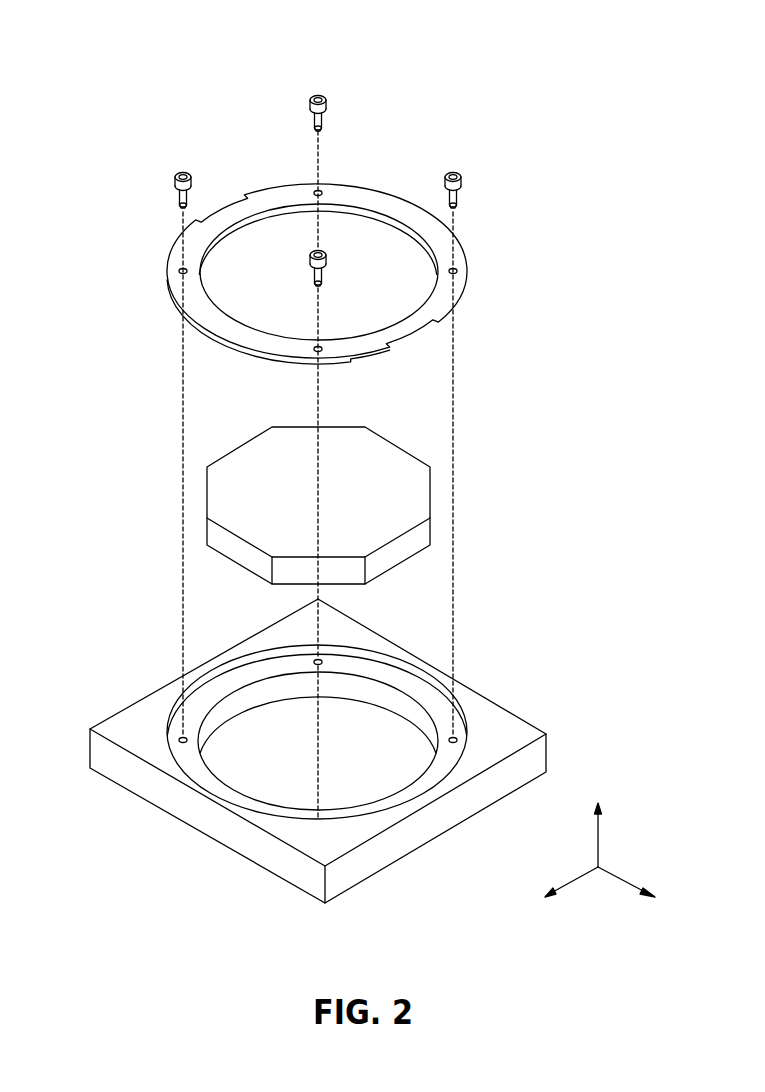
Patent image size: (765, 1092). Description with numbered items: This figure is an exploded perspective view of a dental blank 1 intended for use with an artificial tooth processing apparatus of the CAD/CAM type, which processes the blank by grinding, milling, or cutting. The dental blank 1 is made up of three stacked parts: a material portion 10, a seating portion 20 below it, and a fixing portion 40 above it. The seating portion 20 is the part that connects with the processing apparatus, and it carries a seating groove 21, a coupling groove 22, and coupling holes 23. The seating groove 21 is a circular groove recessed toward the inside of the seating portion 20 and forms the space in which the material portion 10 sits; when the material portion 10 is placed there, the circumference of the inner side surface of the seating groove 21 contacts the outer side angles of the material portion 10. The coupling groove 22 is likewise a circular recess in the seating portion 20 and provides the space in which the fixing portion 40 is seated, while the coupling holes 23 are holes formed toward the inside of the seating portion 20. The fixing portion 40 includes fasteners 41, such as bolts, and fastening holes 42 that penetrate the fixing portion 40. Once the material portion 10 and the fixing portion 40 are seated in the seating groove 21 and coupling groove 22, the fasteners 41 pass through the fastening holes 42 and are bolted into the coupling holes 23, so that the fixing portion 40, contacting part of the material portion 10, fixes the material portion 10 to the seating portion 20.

The dental blank 1 is at (313, 40).
The material portion 10 is at (415, 498).
The seating portion 20 is at (493, 703).
The seating groove 21 is at (203, 735).
The coupling groove 22 is at (213, 690).
The coupling holes 23 is at (181, 738).
The fixing portion 40 is at (450, 310).
The fasteners 41 is at (456, 195).
The fastening holes 42 is at (457, 270).